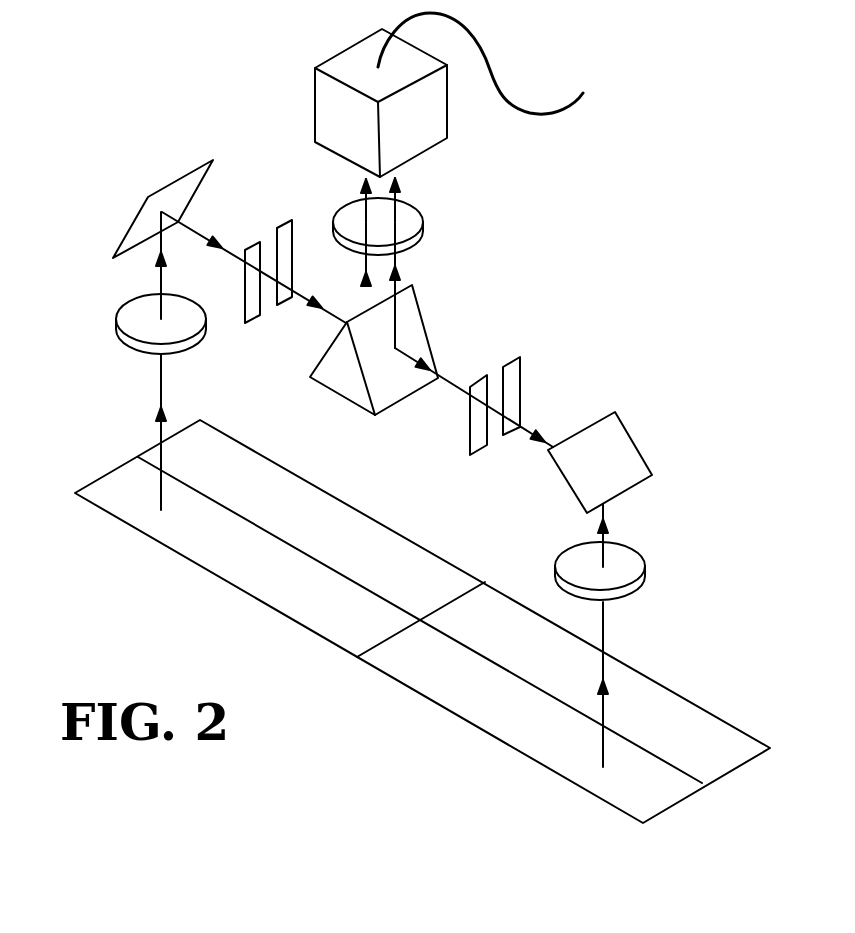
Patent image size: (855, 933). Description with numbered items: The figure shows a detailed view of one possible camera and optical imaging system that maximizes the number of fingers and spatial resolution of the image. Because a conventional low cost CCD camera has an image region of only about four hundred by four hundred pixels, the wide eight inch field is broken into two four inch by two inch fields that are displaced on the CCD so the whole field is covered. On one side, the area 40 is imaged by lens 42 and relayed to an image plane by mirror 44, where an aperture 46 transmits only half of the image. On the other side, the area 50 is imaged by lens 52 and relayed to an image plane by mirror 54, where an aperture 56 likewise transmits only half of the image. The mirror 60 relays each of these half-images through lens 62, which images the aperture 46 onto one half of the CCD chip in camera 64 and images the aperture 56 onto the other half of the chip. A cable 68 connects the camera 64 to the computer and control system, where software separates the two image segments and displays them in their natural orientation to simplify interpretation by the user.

The area 40 is at (487, 692).
The lens 42 is at (630, 565).
The mirror 44 is at (643, 450).
The aperture 46 is at (520, 377).
The area 50 is at (315, 596).
The lens 52 is at (130, 323).
The mirror 54 is at (135, 220).
The aperture 56 is at (283, 222).
The mirror 60 is at (412, 330).
The lens 62 is at (413, 220).
The camera 64 is at (425, 133).
The cable 68 is at (503, 88).